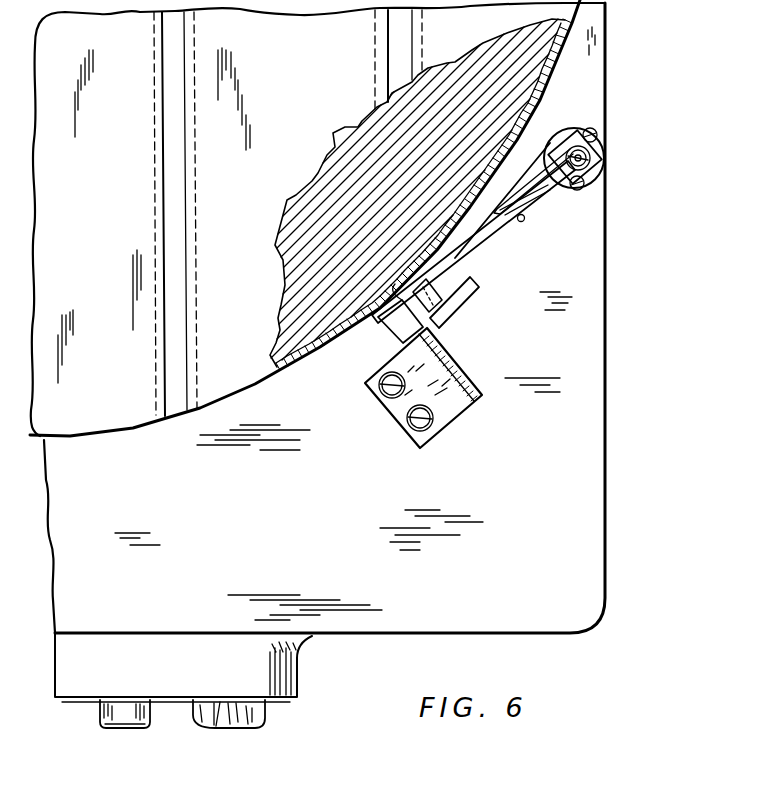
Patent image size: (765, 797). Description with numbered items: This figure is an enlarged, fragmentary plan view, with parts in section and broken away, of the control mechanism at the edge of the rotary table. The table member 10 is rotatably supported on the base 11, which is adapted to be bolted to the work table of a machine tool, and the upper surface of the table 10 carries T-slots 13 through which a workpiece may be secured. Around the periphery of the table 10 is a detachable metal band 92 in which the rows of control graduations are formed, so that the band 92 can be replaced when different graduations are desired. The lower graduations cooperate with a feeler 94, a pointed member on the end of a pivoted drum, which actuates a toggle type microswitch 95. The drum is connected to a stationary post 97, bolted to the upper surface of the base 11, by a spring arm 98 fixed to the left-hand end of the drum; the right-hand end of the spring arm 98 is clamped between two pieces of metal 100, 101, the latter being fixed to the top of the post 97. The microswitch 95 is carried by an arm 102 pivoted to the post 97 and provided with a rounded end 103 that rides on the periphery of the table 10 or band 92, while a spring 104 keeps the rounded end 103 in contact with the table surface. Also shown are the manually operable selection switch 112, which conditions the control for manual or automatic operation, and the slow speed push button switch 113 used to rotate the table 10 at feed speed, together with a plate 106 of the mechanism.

The table member 10 is at (318, 193).
The base 11 is at (593, 495).
The T-slots 13 is at (163, 365).
The band 92 is at (298, 362).
The feeler 94 is at (407, 337).
The toggle type microswitch 95 is at (478, 292).
The stationary post 97 is at (593, 167).
The spring arm 98 is at (538, 170).
The clamping piece of metal 100 is at (592, 97).
The clamping piece of metal 101 is at (605, 152).
The arm 102 is at (500, 245).
The rounded end 103 is at (350, 330).
The spring 104 is at (547, 195).
The mounting plate 106 is at (398, 418).
The selection switch 112 is at (263, 717).
The slow speed push button switch 113 is at (132, 710).